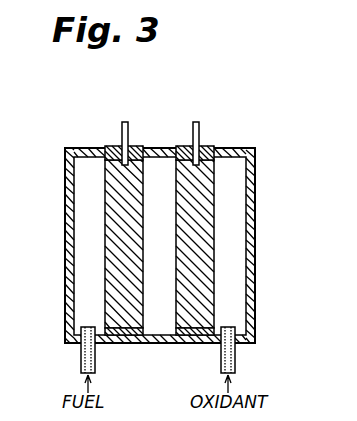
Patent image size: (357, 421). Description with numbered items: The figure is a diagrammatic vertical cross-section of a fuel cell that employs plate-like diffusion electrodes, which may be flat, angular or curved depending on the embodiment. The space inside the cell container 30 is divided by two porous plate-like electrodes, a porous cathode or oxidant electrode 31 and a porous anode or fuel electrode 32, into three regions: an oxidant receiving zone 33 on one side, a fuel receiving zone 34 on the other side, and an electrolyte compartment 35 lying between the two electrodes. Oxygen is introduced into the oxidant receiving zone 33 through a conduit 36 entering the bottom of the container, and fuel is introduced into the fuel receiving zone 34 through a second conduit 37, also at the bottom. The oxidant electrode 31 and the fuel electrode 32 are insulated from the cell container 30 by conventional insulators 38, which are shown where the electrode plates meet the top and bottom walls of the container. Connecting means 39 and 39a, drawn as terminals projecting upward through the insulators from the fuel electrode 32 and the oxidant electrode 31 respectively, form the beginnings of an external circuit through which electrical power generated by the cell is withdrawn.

The cell container 30 is at (256, 197).
The porous cathode (oxidant electrode) 31 is at (211, 244).
The porous anode (fuel electrode) 32 is at (105, 196).
The oxidant receiving zone 33 is at (240, 234).
The fuel receiving zone 34 is at (100, 240).
The electrolyte compartment 35 is at (168, 237).
The conduit 36 is at (220, 364).
The conduit 37 is at (96, 368).
The insulators 38 is at (178, 146).
The connecting means 39 is at (121, 130).
The connecting means 39a is at (200, 131).